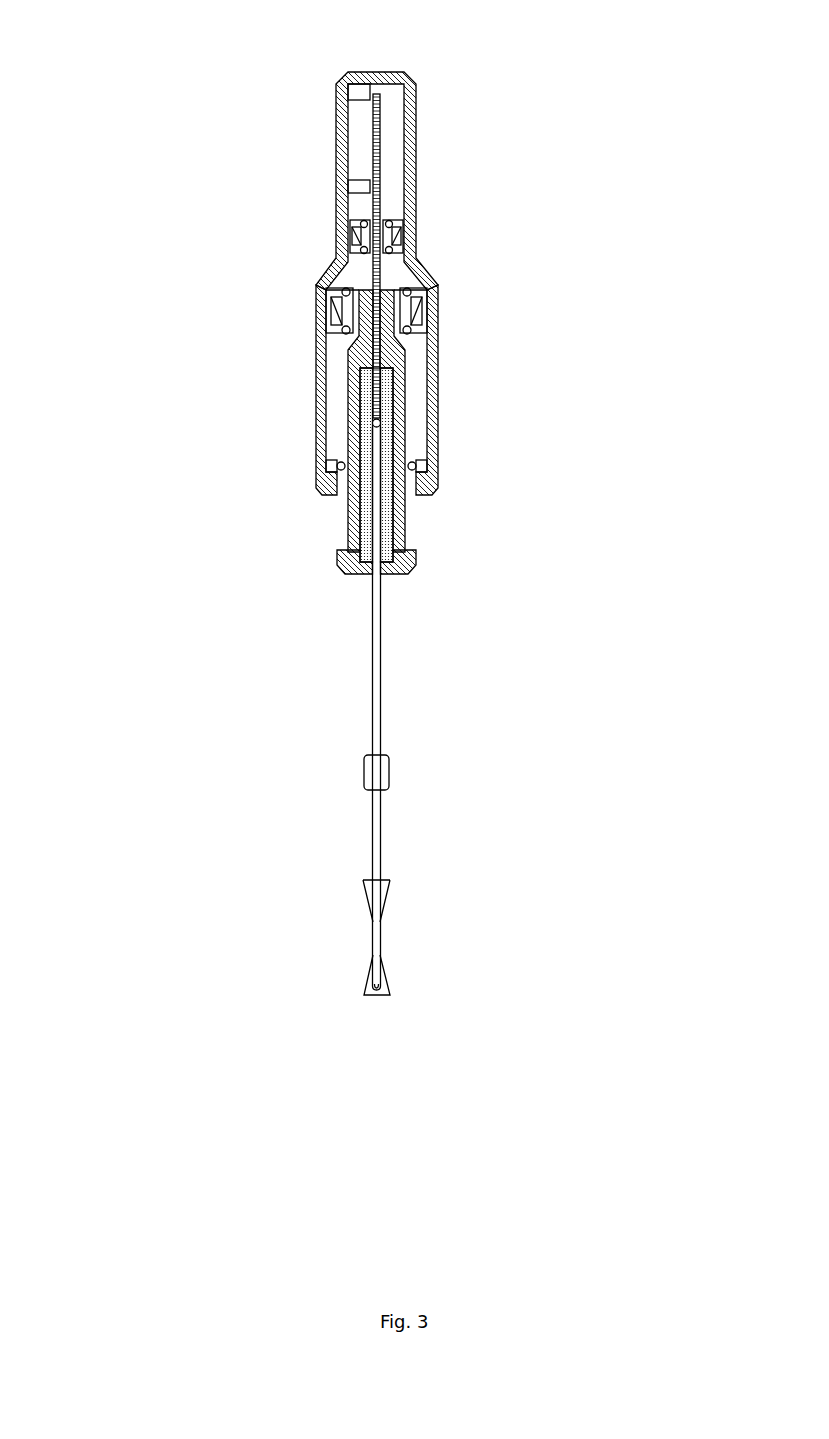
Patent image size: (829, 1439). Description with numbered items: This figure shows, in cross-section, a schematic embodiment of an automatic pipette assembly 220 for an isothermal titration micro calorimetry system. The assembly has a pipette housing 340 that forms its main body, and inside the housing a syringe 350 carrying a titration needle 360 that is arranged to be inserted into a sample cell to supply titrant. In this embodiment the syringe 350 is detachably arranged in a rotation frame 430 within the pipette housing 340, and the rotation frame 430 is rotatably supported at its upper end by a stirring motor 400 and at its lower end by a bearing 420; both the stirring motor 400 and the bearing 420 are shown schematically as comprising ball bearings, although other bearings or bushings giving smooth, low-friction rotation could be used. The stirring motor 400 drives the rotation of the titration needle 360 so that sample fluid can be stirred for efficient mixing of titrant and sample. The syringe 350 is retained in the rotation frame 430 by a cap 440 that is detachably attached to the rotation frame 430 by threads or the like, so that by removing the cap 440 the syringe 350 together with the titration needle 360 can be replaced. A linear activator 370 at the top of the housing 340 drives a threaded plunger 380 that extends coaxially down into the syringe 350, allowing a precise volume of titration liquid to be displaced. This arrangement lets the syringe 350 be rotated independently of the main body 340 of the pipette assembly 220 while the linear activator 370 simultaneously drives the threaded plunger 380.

The pipette assembly 220 is at (470, 57).
The pipette housing 340 is at (416, 110).
The syringe 350 is at (381, 414).
The titration needle 360 is at (372, 731).
The linear activator 370 is at (399, 196).
The threaded plunger 380 is at (382, 271).
The stirring motor 400 is at (443, 298).
The bearing 420 is at (337, 466).
The rotation frame 430 is at (348, 511).
The cap 440 is at (337, 556).